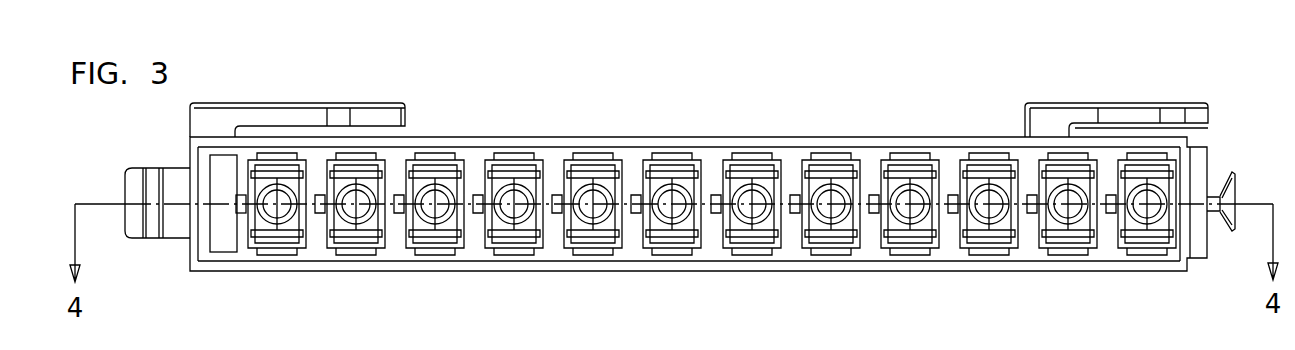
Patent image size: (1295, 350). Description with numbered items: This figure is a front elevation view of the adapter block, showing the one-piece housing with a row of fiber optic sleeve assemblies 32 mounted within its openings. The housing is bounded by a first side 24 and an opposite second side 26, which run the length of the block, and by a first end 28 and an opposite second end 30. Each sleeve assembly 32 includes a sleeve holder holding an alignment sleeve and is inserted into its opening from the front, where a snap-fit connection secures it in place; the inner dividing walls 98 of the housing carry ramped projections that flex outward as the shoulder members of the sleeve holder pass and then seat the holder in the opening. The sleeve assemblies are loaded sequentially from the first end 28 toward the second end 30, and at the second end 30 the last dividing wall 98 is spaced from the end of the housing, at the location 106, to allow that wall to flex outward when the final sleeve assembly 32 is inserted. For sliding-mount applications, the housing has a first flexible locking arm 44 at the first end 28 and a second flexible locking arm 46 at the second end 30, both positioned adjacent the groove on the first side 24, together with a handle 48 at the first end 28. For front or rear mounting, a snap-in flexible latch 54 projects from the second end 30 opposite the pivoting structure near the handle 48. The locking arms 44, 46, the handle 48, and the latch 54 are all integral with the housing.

The first side 24 is at (593, 137).
The second side 26 is at (348, 272).
The first end 28 is at (1207, 158).
The second end 30 is at (190, 147).
The fiber optic sleeve assembly 32 is at (280, 172).
The first flexible locking arm 44 is at (1128, 117).
The second flexible locking arm 46 is at (377, 110).
The handle 48 is at (1233, 190).
The flexible latch 54 is at (152, 185).
The inner dividing wall 98 is at (242, 220).
The spacing of last dividing wall from second end 106 is at (220, 230).